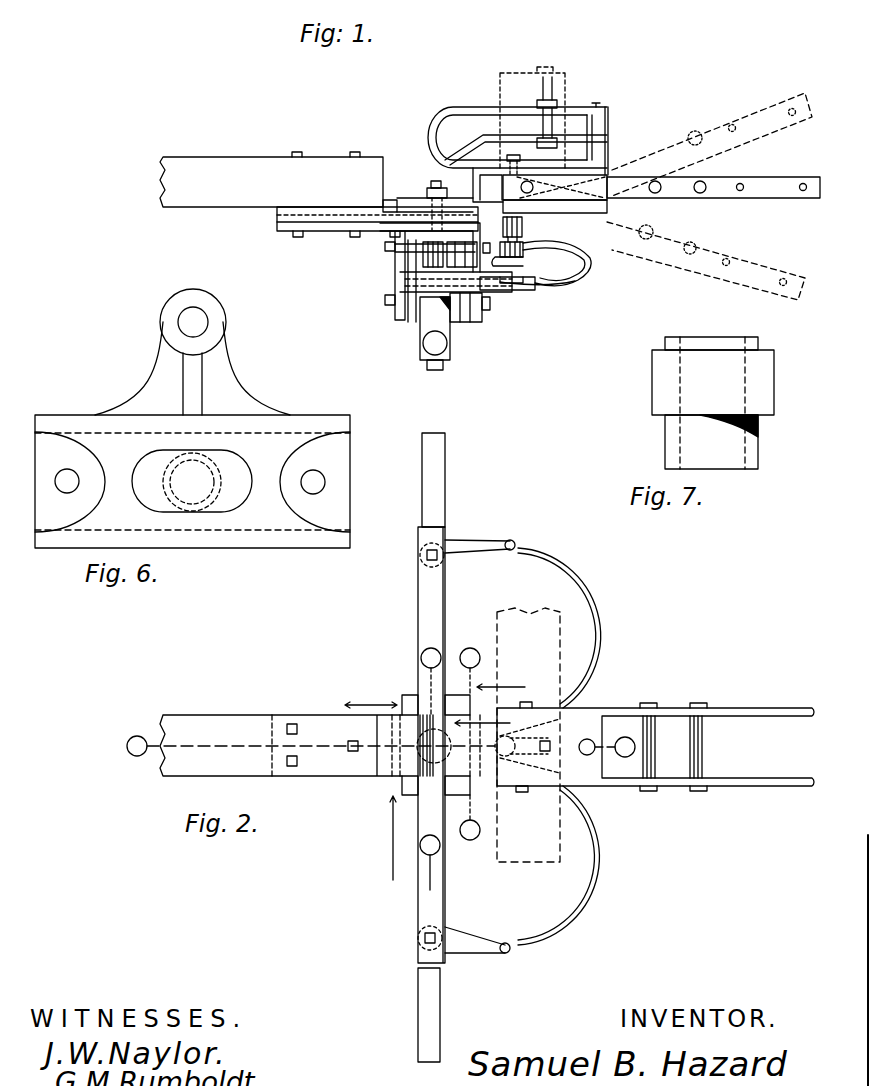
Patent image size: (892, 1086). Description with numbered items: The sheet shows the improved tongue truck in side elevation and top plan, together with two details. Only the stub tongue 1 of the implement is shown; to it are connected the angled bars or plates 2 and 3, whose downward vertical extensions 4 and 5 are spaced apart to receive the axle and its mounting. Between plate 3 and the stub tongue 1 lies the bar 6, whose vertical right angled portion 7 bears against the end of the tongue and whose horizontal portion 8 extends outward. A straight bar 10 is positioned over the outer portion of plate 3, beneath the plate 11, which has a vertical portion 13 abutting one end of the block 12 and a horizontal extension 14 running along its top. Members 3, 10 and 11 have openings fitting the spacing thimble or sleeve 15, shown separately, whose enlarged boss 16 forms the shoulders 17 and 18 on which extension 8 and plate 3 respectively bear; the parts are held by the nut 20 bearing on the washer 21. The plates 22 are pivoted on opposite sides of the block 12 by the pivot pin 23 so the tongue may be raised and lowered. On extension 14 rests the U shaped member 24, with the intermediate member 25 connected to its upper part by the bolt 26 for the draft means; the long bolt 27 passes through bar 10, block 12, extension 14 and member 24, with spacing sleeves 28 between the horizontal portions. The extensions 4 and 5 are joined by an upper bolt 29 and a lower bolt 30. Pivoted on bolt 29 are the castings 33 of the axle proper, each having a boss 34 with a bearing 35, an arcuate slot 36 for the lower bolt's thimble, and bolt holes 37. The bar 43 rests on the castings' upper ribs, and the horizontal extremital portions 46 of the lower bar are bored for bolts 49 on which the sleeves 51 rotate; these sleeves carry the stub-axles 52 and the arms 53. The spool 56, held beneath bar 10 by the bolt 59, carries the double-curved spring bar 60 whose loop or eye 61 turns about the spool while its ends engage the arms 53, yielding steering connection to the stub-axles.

In FIG. 1, the stub tongue 1 is at (215, 165).
In FIG. 2, the stub tongue 1 is at (212, 728).
In FIG. 1, the angled bar or plate 2 is at (330, 228).
In FIG. 1, the angled bar or plate 3 is at (280, 222).
In FIG. 1, the downward vertical extension 4 is at (395, 270).
In FIG. 1, the downward vertical extension 5 is at (490, 318).
In FIG. 1, the bar or plate 6 is at (318, 212).
In FIG. 2, the bar or plate 6 is at (492, 744).
In FIG. 1, the vertical right angled portion 7 is at (383, 204).
In FIG. 1, the horizontal portion 8 is at (385, 200).
In FIG. 2, the horizontal portion 8 is at (400, 770).
In FIG. 1, the straight bar or plate 10 is at (607, 208).
In FIG. 2, the plate or bar 11 is at (381, 746).
In FIG. 1, the block 12 is at (488, 178).
In FIG. 2, the block 12 is at (469, 690).
In FIG. 2, the right angled vertically extending portion 13 is at (392, 789).
In FIG. 1, the horizontal extension 14 is at (612, 175).
In FIG. 7, the spacing thimble or sleeve 15 is at (752, 380).
In FIG. 7, the enlarged boss 16 is at (689, 426).
In FIG. 7, the shoulder or flange 17 is at (762, 350).
In FIG. 7, the shoulder or flange 18 is at (662, 420).
In FIG. 1, the nut 20 is at (433, 181).
In FIG. 1, the washer 21 is at (427, 190).
In FIG. 2, the washer 21 is at (420, 760).
In FIG. 1, the plates 22 is at (765, 188).
In FIG. 2, the plates 22 is at (750, 778).
In FIG. 1, the bolt or pivot pin 23 is at (560, 196).
In FIG. 2, the bolt or pivot pin 23 is at (522, 792).
In FIG. 1, the U shaped member 24 is at (438, 126).
In FIG. 2, the U shaped member 24 is at (420, 738).
In FIG. 1, the horizontally extending member 25 is at (492, 135).
In FIG. 1, the bolt 26 is at (543, 122).
In FIG. 2, the bolt 26 is at (550, 741).
In FIG. 1, the long bolt 27 is at (606, 110).
In FIG. 2, the long bolt 27 is at (586, 752).
In FIG. 1, the spacing sleeves or thimbles 28 is at (608, 132).
In FIG. 1, the bolt 29 is at (410, 292).
In FIG. 1, the bolt 30 is at (385, 302).
In FIG. 6, the members or castings 33 is at (280, 428).
In FIG. 2, the members or castings 33 is at (405, 697).
In FIG. 6, the extended boss or projection 34 is at (232, 372).
In FIG. 1, the sleeve or bearing 35 is at (385, 250).
In FIG. 6, the sleeve or bearing 35 is at (203, 320).
In FIG. 6, the arcuate slots 36 is at (221, 572).
In FIG. 6, the bolt holes 37 is at (66, 490).
In FIG. 1, the horizontally extending bar or plate 43 is at (435, 250).
In FIG. 2, the horizontally extending bar or plate 43 is at (446, 891).
In FIG. 1, the horizontal extremital portions 46 is at (443, 366).
In FIG. 2, the bolts 49 is at (425, 560).
In FIG. 1, the sleeves or cylindrical members 51 is at (470, 325).
In FIG. 1, the stub-axles 52 is at (447, 348).
In FIG. 2, the stub-axles 52 is at (435, 483).
In FIG. 1, the arms or extensions 53 is at (520, 298).
In FIG. 2, the arms or extensions 53 is at (478, 538).
In FIG. 1, the spool or thimble 56 is at (522, 224).
In FIG. 1, the bolt 59 is at (590, 268).
In FIG. 1, the spring bar or member 60 is at (588, 258).
In FIG. 2, the spring bar or member 60 is at (590, 600).
In FIG. 1, the circular loop or eye 61 is at (580, 284).
In FIG. 2, the circular loop or eye 61 is at (570, 786).